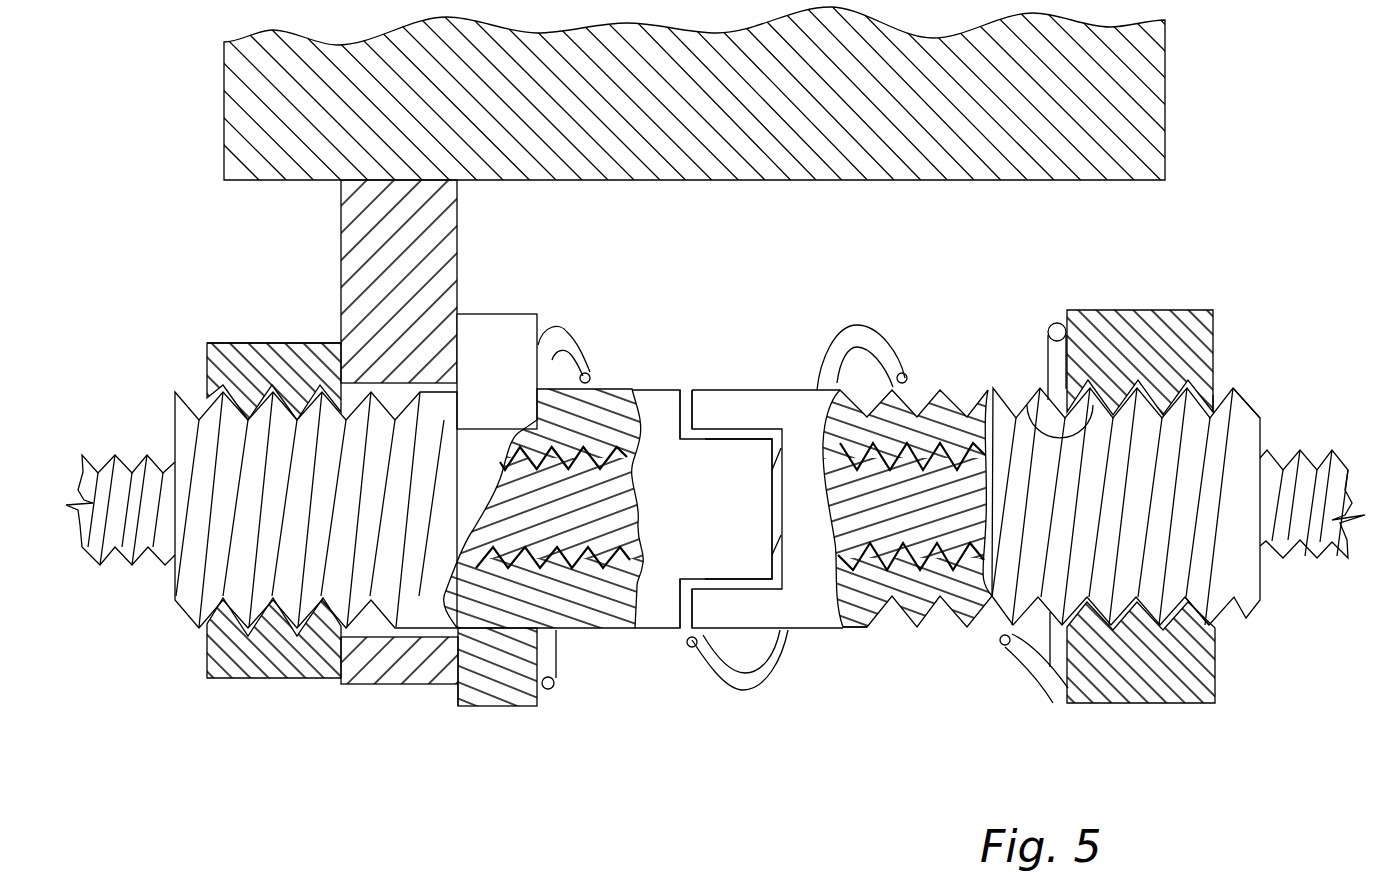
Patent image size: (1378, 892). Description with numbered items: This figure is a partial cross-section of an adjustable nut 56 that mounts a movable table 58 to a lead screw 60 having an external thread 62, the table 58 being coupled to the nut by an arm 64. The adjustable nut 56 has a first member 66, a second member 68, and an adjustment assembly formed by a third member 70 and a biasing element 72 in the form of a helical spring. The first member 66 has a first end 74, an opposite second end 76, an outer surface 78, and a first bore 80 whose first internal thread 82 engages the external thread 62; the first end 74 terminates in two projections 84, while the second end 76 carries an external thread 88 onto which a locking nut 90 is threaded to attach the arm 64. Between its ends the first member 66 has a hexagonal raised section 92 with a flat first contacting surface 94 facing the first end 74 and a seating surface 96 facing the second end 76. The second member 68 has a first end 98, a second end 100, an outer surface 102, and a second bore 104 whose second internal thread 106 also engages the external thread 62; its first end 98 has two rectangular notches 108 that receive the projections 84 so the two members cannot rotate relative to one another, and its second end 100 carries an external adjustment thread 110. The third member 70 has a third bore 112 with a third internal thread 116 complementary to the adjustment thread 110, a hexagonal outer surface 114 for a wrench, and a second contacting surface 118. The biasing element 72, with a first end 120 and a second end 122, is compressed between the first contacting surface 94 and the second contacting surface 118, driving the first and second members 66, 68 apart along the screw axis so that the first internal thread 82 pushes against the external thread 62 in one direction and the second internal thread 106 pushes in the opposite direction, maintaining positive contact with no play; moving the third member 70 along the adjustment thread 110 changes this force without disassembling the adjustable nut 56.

The adjustable nut 56 is at (737, 504).
The movable table 58 is at (614, 180).
The lead screw 60 is at (140, 548).
The external thread 62 is at (140, 458).
The arm 64 is at (341, 242).
The first member 66 is at (503, 313).
The second member 68 is at (855, 627).
The third member 70 is at (1133, 310).
The biasing element 72 is at (745, 690).
The first end 74 is at (648, 407).
The second end 76 is at (192, 567).
The outer surface 78 is at (667, 380).
The first bore 80 is at (624, 561).
The first internal thread 82 is at (586, 560).
The projection 84 is at (738, 518).
The external thread 88 is at (203, 410).
The locking nut 90 is at (260, 343).
The raised section 92 is at (506, 706).
The first contacting surface 94 is at (551, 318).
The seating surface 96 is at (448, 695).
The first end 98 is at (757, 402).
The second end 100 is at (1205, 558).
The outer surface 102 is at (786, 380).
The second bore 104 is at (833, 463).
The second internal thread 106 is at (908, 612).
The notch 108 is at (764, 490).
The adjustment thread 110 is at (1252, 400).
The third bore 112 is at (1030, 398).
The outer surface 114 is at (1177, 706).
The third internal thread 116 is at (1210, 393).
The second contacting surface 118 is at (1058, 315).
The first end 120 is at (553, 690).
The second end 122 is at (1053, 687).